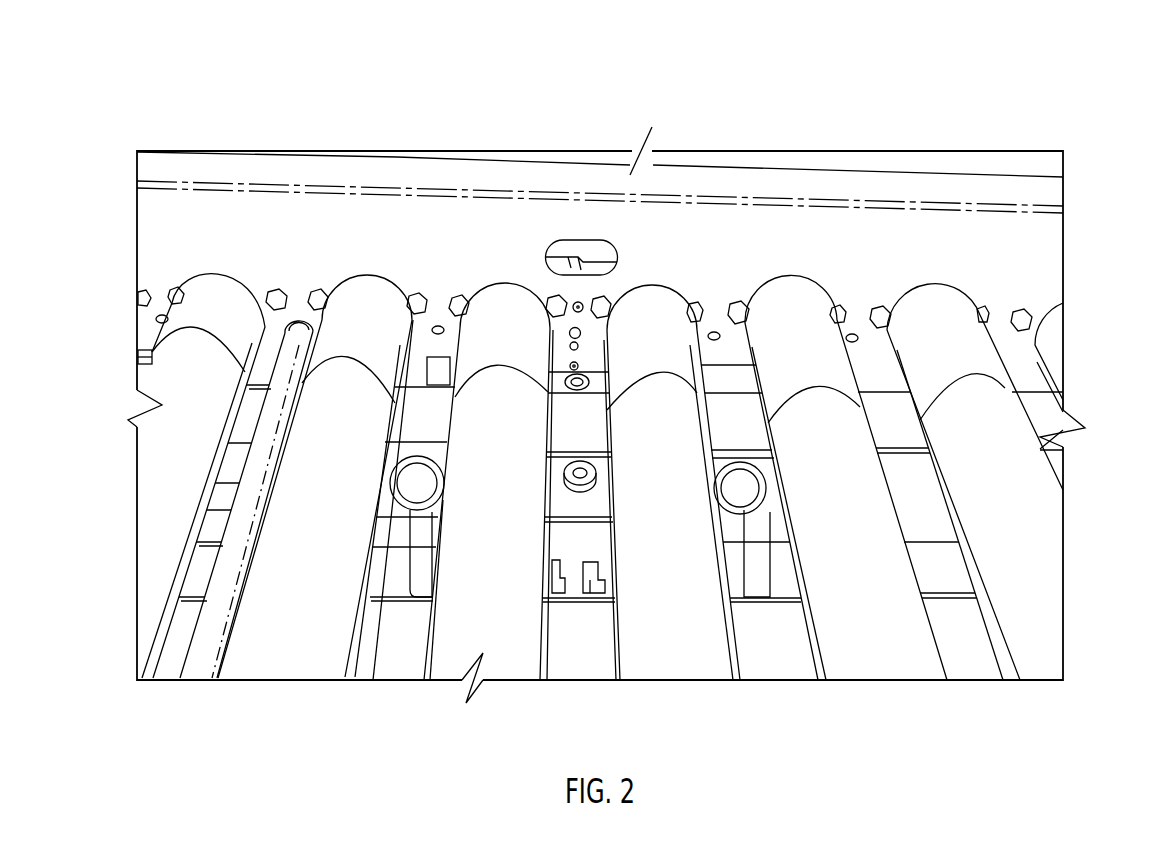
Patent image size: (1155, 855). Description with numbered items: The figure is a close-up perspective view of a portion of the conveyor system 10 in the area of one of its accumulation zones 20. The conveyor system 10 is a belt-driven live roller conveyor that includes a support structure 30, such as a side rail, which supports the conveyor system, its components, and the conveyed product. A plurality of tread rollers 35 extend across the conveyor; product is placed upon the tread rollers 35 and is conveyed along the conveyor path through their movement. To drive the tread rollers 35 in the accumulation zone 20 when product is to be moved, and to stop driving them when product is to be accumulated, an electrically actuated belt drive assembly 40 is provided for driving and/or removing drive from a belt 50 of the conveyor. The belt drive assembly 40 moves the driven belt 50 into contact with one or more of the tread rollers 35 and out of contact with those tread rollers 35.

The conveyor system 10 is at (1043, 80).
The accumulation zone 20 is at (860, 110).
The support structure 30 is at (383, 217).
The tread rollers 35 is at (323, 425).
The electrically actuated belt drive assembly 40 is at (591, 365).
The belt 50 is at (570, 425).